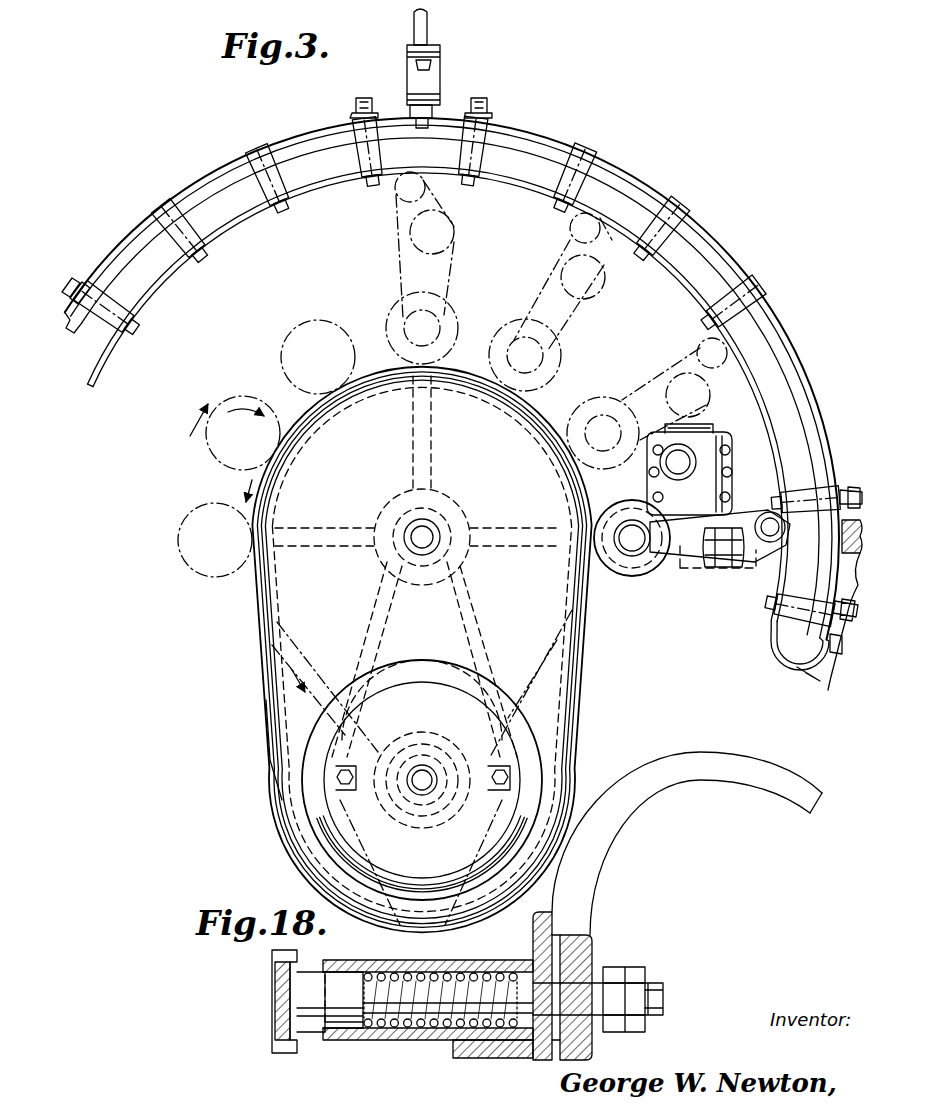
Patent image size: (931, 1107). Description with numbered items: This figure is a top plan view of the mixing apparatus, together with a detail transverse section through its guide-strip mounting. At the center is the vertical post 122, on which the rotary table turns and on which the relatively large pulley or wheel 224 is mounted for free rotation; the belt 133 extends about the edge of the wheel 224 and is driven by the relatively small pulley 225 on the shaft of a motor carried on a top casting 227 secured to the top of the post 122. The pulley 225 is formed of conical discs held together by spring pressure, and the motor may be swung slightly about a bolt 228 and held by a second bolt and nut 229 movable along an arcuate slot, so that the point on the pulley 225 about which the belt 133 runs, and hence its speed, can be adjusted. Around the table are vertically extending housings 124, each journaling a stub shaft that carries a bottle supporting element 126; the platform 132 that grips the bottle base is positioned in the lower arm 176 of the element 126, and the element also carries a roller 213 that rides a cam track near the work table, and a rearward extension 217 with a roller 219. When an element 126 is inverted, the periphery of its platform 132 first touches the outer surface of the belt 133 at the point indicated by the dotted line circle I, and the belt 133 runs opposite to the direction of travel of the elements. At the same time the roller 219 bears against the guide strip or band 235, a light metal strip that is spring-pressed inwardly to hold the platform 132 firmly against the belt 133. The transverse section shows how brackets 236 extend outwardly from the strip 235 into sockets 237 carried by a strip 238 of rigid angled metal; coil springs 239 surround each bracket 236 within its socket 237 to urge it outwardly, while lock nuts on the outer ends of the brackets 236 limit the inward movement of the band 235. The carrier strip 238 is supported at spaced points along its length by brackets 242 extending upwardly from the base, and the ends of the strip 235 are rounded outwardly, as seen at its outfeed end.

In FIG. 3, the dotted line circle I is at (196, 566).
In FIG. 3, the vertical post 122 is at (438, 524).
In FIG. 3, the housing 124 is at (710, 440).
In FIG. 3, the bottle supporting element 126 is at (450, 235).
In FIG. 3, the platform 132 is at (480, 308).
In FIG. 3, the belt 133 is at (582, 632).
In FIG. 3, the lower arm 176 is at (440, 272).
In FIG. 3, the roller 213 is at (728, 568).
In FIG. 3, the rearward extension 217 is at (404, 198).
In FIG. 3, the roller 219 is at (440, 182).
In FIG. 3, the pulley or wheel 224 is at (520, 735).
In FIG. 3, the pulley 225 is at (336, 770).
In FIG. 3, the top casting 227 is at (286, 790).
In FIG. 3, the bolt 228 is at (360, 800).
In FIG. 3, the second bolt and nut 229 is at (510, 770).
In FIG. 3, the guide strip or band 235 is at (168, 270).
In FIG. 18, the guide strip or band 235 is at (280, 1006).
In FIG. 3, the bracket 236 is at (140, 332).
In FIG. 18, the bracket 236 is at (292, 1055).
In FIG. 3, the socket 237 is at (498, 128).
In FIG. 18, the socket 237 is at (392, 1040).
In FIG. 3, the strip 238 is at (672, 172).
In FIG. 18, the strip 238 is at (462, 1056).
In FIG. 18, the coil spring 239 is at (445, 1030).
In FIG. 3, the bracket 242 is at (436, 50).